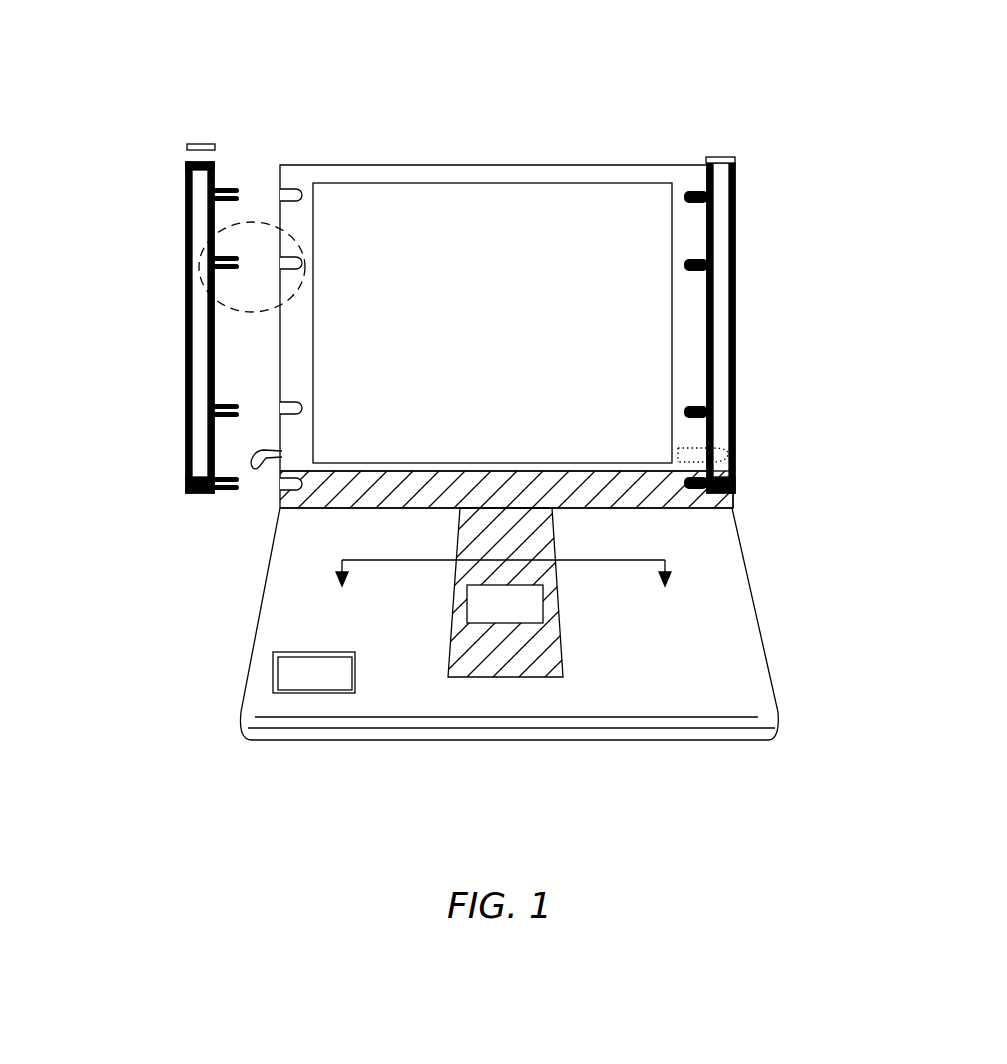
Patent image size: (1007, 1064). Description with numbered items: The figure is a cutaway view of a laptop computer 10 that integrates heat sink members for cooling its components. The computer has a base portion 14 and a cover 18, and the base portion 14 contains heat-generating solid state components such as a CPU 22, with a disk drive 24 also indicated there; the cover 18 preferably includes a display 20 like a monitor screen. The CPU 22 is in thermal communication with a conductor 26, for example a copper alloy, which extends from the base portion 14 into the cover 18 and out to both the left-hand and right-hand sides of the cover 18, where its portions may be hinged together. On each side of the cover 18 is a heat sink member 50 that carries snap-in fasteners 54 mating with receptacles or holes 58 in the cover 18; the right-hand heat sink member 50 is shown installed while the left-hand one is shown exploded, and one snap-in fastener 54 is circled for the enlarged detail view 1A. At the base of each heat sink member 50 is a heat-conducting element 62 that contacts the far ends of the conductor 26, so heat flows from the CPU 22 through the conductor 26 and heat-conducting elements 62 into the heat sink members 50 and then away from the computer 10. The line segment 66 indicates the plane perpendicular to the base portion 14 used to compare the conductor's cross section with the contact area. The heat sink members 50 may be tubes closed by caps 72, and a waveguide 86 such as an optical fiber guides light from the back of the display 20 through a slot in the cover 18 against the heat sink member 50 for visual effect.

The detail view of snap-in fastener 1A is at (253, 223).
The laptop computer 10 is at (518, 134).
The base portion 14 is at (767, 665).
The cover 18 is at (366, 163).
The display 20 is at (583, 215).
The CPU 22 is at (497, 624).
The disk drive 24 is at (290, 677).
The conductor 26 is at (613, 498).
The heat sink member 50 is at (187, 436).
The snap-in fastener 54 is at (215, 406).
The receptacle or hole 58 is at (305, 407).
The heat-conducting element 62 is at (187, 490).
The line segment 66 is at (435, 562).
The cap 72 is at (200, 143).
The waveguide 86 is at (273, 452).